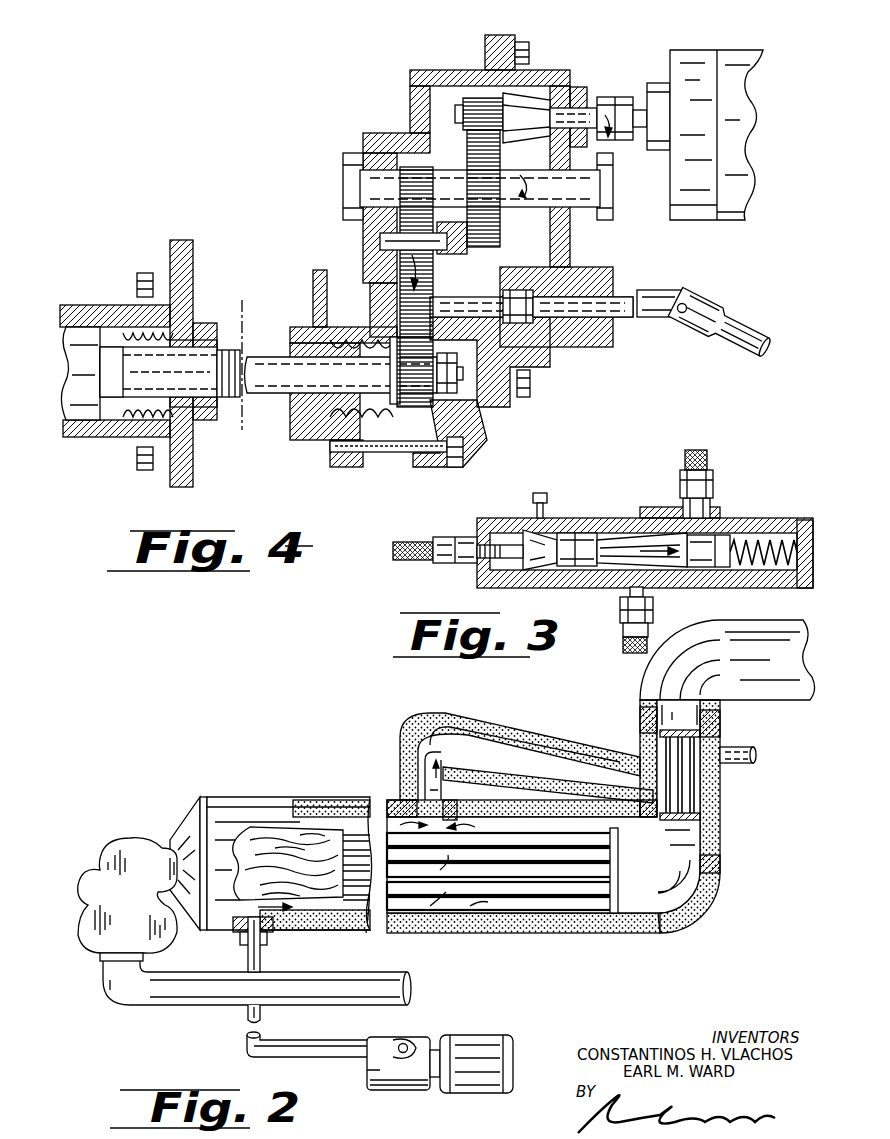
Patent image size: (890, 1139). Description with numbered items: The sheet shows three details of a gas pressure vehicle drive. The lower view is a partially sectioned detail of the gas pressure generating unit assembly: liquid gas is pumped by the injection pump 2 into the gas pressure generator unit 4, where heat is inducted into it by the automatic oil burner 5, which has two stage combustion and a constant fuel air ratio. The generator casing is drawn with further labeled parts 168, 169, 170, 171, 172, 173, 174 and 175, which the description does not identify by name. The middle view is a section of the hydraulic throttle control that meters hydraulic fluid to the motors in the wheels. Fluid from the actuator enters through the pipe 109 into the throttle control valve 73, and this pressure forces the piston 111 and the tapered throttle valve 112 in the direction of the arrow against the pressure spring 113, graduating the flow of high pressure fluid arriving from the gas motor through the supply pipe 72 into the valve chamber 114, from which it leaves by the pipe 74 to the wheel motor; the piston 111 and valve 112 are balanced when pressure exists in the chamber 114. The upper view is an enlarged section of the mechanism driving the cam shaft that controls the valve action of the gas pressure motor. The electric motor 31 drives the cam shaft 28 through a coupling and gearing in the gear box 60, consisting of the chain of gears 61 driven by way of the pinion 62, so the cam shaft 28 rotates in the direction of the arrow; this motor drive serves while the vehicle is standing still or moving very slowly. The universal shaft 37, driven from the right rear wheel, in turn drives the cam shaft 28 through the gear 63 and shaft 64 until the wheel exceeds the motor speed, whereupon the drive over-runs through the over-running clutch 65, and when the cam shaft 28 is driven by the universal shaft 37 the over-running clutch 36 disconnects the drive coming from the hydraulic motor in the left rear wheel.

In FIG. 4, the gear box 60 is at (393, 137).
In FIG. 4, the pinion 62 is at (483, 108).
In FIG. 4, the electric motor 31 is at (738, 93).
In FIG. 4, the over-running clutch 36 is at (80, 342).
In FIG. 4, the chain of gears 61 is at (403, 320).
In FIG. 4, the cam shaft 28 is at (262, 365).
In FIG. 4, the gear 63 is at (467, 268).
In FIG. 4, the shaft 64 is at (452, 305).
In FIG. 4, the over-running clutch 65 is at (573, 262).
In FIG. 4, the universal shaft 37 is at (748, 330).
In FIG. 3, the pipe 109 is at (427, 542).
In FIG. 3, the throttle control valve 73 is at (570, 517).
In FIG. 3, the piston 111 is at (585, 550).
In FIG. 3, the valve chamber 114 is at (653, 515).
In FIG. 3, the supply pipe 72 is at (705, 468).
In FIG. 3, the tapered throttle valve 112 is at (702, 547).
In FIG. 3, the pressure spring 113 is at (778, 533).
In FIG. 3, the pipe 74 is at (623, 632).
In FIG. 2, the gas pressure generator unit 4 is at (257, 813).
In FIG. 2, the filter element 171 is at (306, 862).
In FIG. 2, the automatic oil burner 5 is at (137, 850).
In FIG. 2, the header 173 is at (410, 731).
In FIG. 2, the outlet nipple 175 is at (730, 750).
In FIG. 2, the tubes 174 is at (688, 783).
In FIG. 2, the return pipe 172 is at (400, 903).
In FIG. 2, the heat exchanger shell 168 is at (520, 930).
In FIG. 2, the heat exchanger tubes 169 is at (575, 880).
In FIG. 2, the elbow 170 is at (658, 920).
In FIG. 2, the injection pump 2 is at (382, 1085).